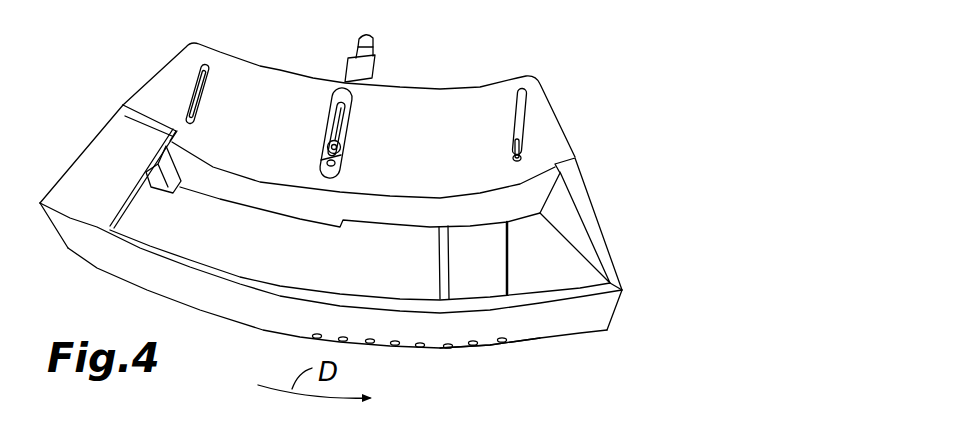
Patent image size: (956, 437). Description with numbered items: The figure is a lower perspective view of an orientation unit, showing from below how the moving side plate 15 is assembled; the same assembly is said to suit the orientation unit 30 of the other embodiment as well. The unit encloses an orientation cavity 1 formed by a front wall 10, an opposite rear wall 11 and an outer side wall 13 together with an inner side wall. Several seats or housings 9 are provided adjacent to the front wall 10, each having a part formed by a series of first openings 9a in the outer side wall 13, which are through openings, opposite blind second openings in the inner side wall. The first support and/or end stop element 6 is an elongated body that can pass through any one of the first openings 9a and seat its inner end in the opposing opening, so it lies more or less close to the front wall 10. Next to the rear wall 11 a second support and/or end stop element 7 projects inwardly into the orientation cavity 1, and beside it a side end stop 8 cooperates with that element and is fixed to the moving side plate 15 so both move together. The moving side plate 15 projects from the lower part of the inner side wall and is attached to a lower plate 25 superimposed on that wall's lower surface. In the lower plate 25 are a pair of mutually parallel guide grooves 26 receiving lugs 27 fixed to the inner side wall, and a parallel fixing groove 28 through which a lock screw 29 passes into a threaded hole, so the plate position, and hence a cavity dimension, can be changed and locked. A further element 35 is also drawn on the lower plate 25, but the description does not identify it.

The orientation cavity 1 is at (347, 274).
The first support and/or end stop element 6 is at (438, 253).
The second support and/or end stop element 7 is at (107, 197).
The side end stop 8 is at (175, 188).
The seat or housing 9 is at (487, 360).
The first openings 9a is at (395, 347).
The front wall 10 is at (595, 237).
The rear wall 11 is at (147, 187).
The outer side wall 13 is at (222, 307).
The moving side plate 15 is at (283, 203).
The lower plate 25 is at (460, 100).
The guide grooves 26 is at (199, 70).
The lugs 27 is at (193, 107).
The fixing groove 28 is at (330, 110).
The lock screw 29 is at (318, 143).
The orientation unit 30 is at (100, 299).
The bolt 35 is at (375, 52).